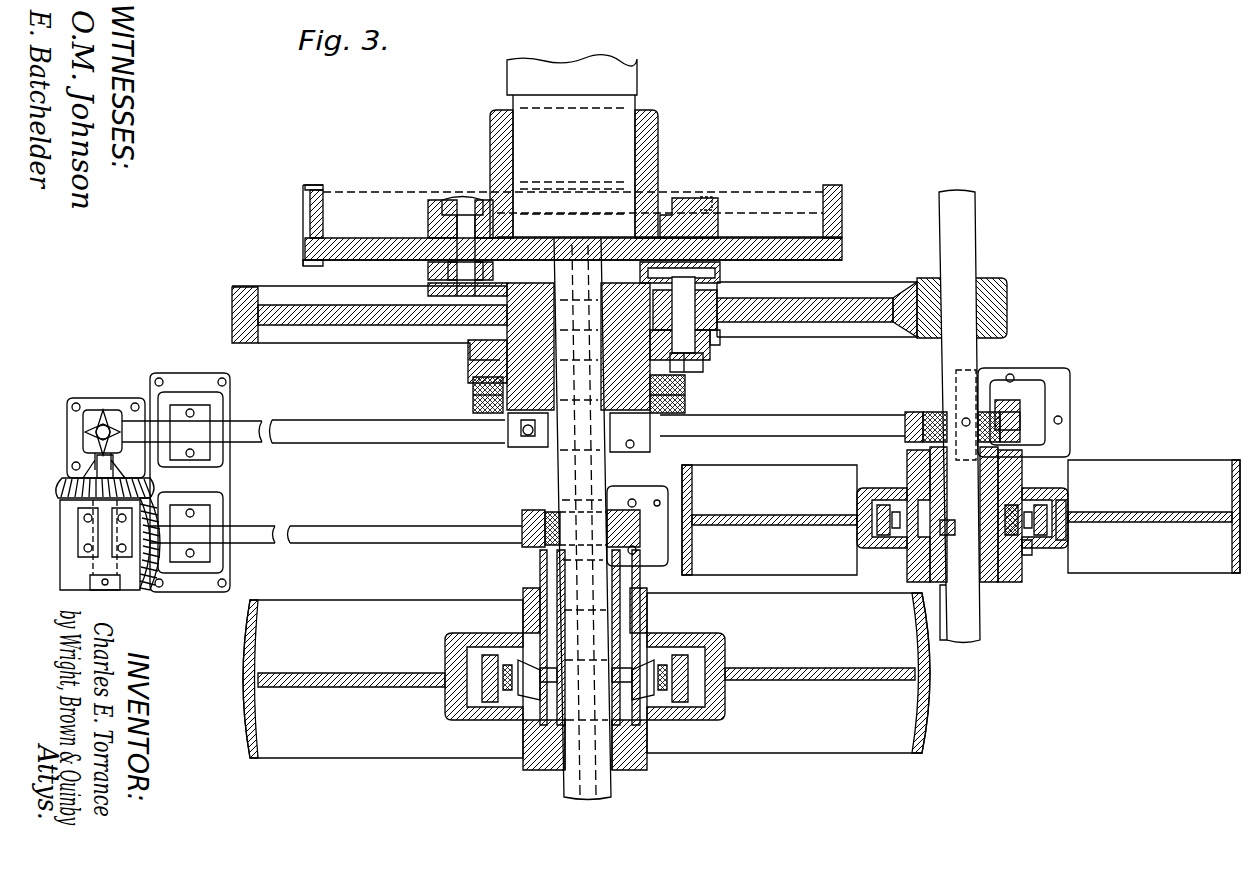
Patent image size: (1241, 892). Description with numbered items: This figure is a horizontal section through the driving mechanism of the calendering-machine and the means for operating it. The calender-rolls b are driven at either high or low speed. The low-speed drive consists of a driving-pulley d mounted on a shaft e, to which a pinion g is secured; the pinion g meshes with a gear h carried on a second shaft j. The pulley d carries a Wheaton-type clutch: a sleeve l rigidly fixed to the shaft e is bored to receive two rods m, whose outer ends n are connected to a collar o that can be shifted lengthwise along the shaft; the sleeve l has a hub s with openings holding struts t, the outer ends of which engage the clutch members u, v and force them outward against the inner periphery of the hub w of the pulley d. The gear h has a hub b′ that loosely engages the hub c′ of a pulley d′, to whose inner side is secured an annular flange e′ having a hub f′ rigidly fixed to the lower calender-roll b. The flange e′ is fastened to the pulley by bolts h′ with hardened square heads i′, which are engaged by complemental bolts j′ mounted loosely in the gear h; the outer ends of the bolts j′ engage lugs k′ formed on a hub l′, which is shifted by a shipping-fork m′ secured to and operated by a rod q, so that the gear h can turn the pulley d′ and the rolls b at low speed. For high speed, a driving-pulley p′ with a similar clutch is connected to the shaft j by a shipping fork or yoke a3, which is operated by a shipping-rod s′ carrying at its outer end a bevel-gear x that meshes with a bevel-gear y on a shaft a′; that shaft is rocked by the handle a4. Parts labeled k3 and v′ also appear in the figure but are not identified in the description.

The calender-rolls b is at (598, 130).
The hub of annular flange f′ is at (656, 152).
The pulley d′ is at (842, 200).
The annular flange e′ is at (700, 215).
The bolts h′ is at (458, 222).
The shaft j is at (568, 478).
The hub of gear b′ is at (500, 365).
The square bolt-heads i′ is at (490, 285).
The complemental bolts j′ is at (515, 292).
The lugs k′ is at (712, 345).
The sleeve l is at (470, 392).
The shipping-fork m′ is at (686, 402).
The hub l′ is at (515, 430).
The set screw v′ is at (524, 436).
The hub of pulley c′ is at (532, 470).
The shipping-fork or yoke a3 is at (523, 522).
The shipping-rod s′ is at (470, 535).
The gear h is at (890, 300).
The pinion g is at (995, 283).
The shaft e is at (985, 355).
The outer ends of rods n is at (995, 400).
The collar o is at (918, 412).
The struts t is at (900, 548).
The rods m is at (930, 472).
The clutch member u is at (880, 532).
The rod q is at (818, 440).
The driving-pulley d is at (1135, 512).
The hub of sleeve s is at (1010, 550).
The clutch member v is at (1062, 550).
The hub of pulley w is at (1070, 540).
The driving-pulley p′ is at (836, 668).
The bracket k3 is at (78, 418).
The handle a4 is at (106, 410).
The bevel-gear x is at (155, 493).
The bevel-gear y is at (72, 478).
The shaft a′ is at (75, 510).